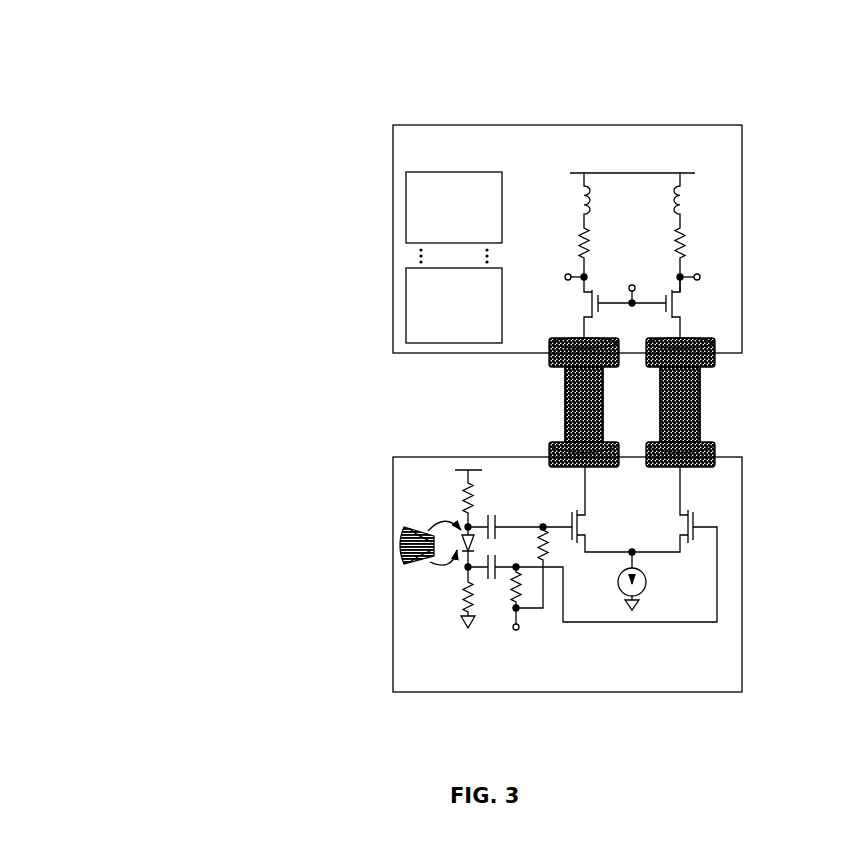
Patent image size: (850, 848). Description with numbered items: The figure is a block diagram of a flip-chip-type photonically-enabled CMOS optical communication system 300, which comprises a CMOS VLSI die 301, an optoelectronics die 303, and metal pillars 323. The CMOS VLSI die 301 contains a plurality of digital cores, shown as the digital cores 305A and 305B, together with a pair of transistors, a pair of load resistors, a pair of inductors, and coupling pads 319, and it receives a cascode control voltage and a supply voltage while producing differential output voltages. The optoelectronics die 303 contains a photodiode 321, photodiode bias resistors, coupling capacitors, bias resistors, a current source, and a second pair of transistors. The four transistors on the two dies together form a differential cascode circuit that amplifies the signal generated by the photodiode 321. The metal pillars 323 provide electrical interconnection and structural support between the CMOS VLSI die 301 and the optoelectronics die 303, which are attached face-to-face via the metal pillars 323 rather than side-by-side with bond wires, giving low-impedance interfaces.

The photonically-enabled CMOS optical communication system 300 is at (120, 91).
The CMOS VLSI die 301 is at (592, 151).
The optoelectronics die 303 is at (686, 681).
The digital core 305A is at (436, 240).
The digital core 305B is at (436, 338).
The coupling pads 319 is at (626, 373).
The photodiode 321 is at (448, 556).
The metal pillars 323 is at (658, 398).